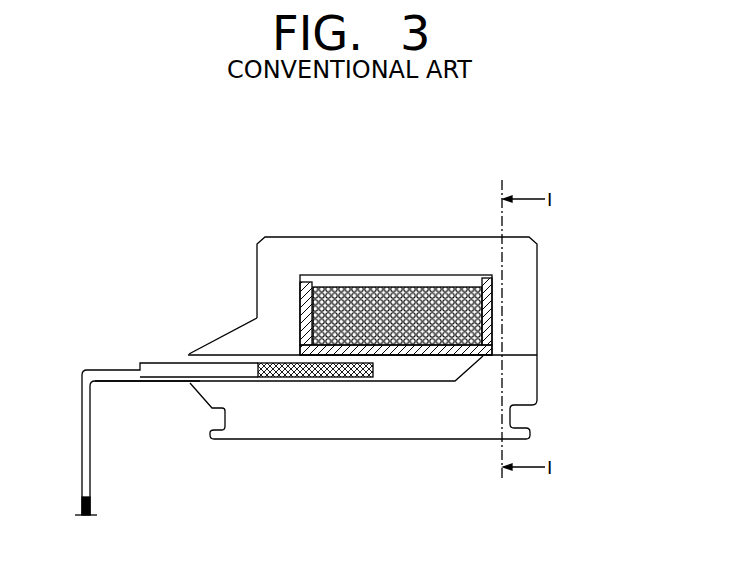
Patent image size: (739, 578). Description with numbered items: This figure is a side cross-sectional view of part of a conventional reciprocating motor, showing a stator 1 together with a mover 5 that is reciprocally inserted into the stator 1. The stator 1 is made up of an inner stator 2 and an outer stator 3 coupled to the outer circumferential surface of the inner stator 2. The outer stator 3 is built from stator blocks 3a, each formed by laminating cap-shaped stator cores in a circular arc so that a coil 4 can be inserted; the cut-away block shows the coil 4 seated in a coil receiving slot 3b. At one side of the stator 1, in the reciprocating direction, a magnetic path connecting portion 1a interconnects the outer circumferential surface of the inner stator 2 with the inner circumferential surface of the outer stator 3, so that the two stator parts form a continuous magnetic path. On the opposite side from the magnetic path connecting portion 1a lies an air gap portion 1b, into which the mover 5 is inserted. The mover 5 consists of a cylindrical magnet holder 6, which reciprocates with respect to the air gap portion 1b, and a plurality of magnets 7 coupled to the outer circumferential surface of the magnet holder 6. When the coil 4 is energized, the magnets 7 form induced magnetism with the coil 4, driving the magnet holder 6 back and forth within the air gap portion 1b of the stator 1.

The stator 1 is at (622, 300).
The magnetic path connecting portion 1a is at (537, 355).
The air gap portion 1b is at (170, 384).
The inner stator 2 is at (527, 381).
The outer stator 3 is at (537, 318).
The stator block 3a is at (288, 236).
The coil receiving slot 3b is at (343, 275).
The coil 4 is at (404, 290).
The mover 5 is at (222, 218).
The magnet holder 6 is at (170, 362).
The magnet 7 is at (280, 360).